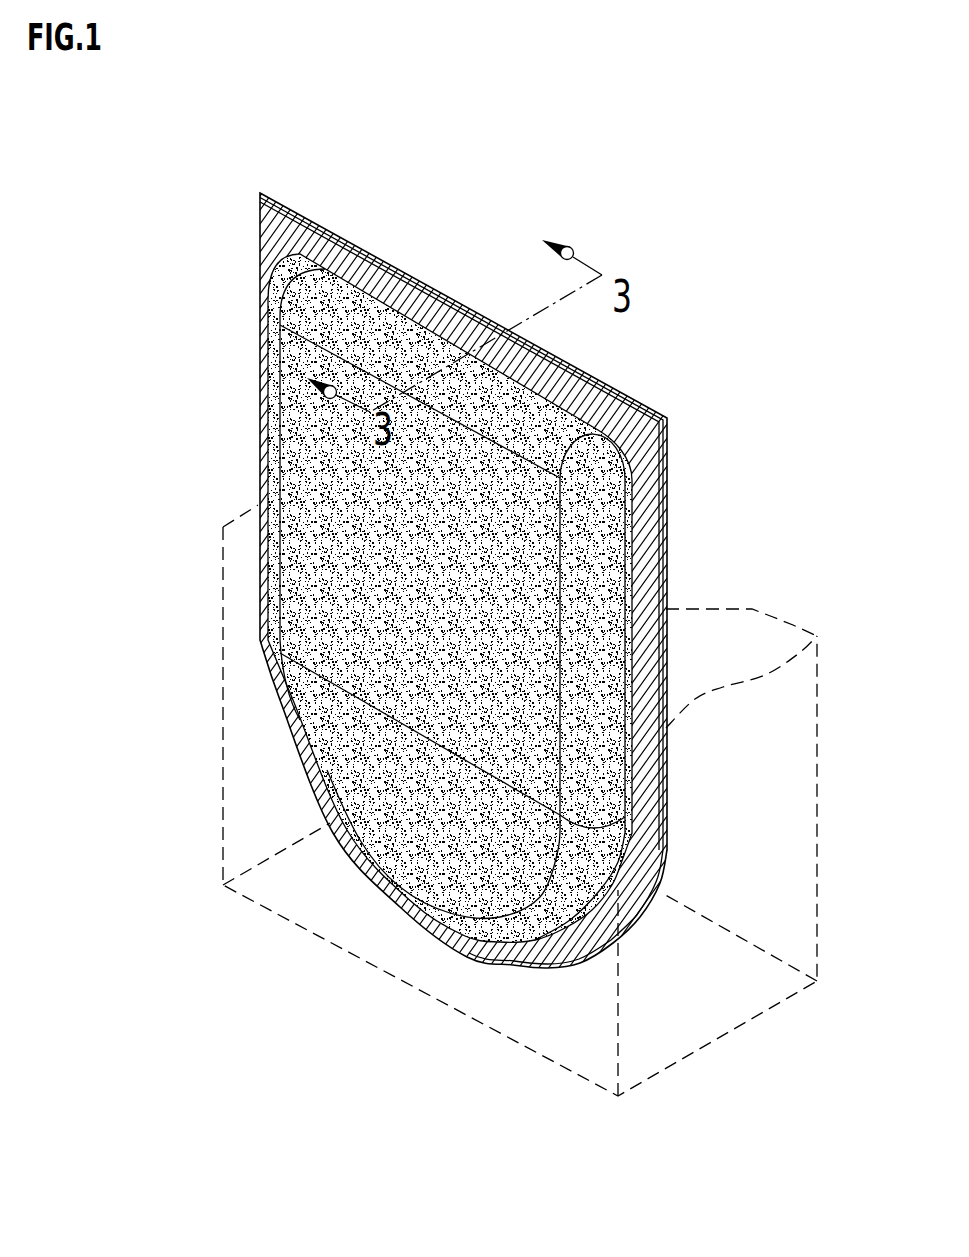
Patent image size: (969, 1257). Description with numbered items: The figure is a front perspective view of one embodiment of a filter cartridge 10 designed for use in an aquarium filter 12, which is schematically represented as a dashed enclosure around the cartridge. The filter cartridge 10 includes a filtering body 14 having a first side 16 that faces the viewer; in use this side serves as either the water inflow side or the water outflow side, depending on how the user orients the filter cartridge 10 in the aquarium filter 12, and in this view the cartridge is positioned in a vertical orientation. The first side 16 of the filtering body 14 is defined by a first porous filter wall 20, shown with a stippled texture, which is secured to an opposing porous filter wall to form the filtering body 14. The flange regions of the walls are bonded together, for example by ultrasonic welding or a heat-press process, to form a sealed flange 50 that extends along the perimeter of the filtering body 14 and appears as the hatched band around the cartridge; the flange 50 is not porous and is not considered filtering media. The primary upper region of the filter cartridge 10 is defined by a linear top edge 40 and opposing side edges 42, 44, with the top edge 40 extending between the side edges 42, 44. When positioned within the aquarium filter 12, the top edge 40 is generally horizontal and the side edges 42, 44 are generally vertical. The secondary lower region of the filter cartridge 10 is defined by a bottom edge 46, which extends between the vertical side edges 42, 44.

The filter cartridge 10 is at (217, 222).
The aquarium filter 12 is at (223, 820).
The filtering body 14 is at (325, 543).
The first side 16 is at (498, 648).
The first porous filter wall 20 is at (410, 538).
The top edge 40 is at (335, 300).
The side edge 42 is at (265, 440).
The side edge 44 is at (603, 576).
The bottom edge 46 is at (457, 920).
The sealed flange 50 is at (277, 226).